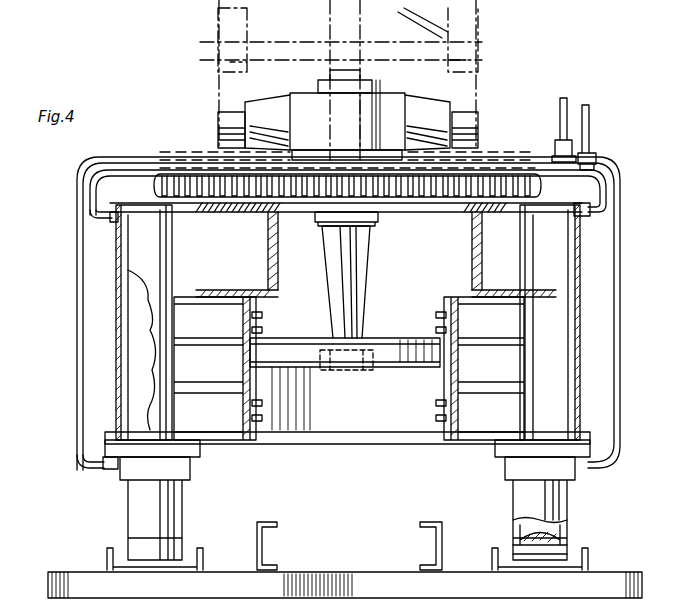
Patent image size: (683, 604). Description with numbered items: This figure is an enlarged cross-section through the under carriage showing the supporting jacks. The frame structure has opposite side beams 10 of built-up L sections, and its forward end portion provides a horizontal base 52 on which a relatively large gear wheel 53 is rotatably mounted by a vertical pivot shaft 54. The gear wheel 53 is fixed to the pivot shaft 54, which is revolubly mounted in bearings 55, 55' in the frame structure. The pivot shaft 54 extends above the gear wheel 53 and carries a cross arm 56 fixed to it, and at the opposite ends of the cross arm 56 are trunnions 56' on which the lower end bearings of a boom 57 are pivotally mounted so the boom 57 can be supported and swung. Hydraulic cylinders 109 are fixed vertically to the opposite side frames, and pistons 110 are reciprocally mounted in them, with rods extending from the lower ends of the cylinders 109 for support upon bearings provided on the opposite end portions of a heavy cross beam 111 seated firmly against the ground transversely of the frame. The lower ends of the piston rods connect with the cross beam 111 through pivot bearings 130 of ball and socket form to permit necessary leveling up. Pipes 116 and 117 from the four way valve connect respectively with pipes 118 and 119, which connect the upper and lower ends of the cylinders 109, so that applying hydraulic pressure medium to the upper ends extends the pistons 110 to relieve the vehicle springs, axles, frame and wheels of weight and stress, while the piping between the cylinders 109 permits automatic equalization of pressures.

The side beam 10 is at (260, 322).
The horizontal base 52 is at (312, 213).
The gear wheel 53 is at (495, 170).
The vertical pivot shaft 54 is at (368, 108).
The bearing 55 is at (326, 282).
The bearing 55' is at (346, 377).
The cross arm 56 is at (267, 108).
The trunnion 56' is at (210, 119).
The boom 57 is at (217, 36).
The hydraulic cylinder 109 is at (130, 258).
The piston 110 is at (125, 326).
The cross beam 111 is at (342, 578).
The pipe 116 is at (565, 100).
The pipe 117 is at (588, 125).
The pipe 118 is at (90, 205).
The pipe 119 is at (76, 188).
The pivot bearing 130 is at (568, 526).